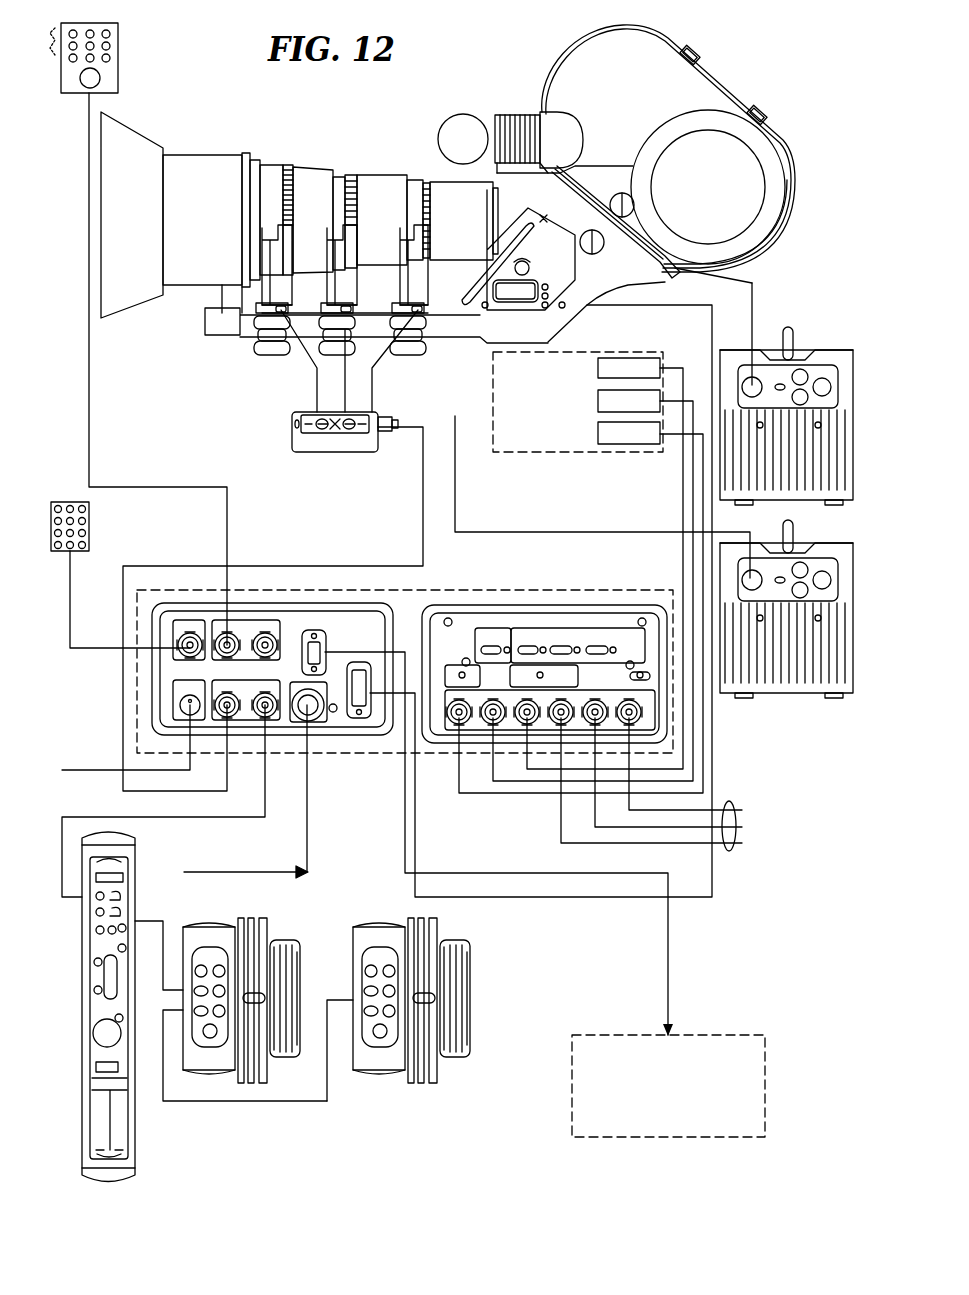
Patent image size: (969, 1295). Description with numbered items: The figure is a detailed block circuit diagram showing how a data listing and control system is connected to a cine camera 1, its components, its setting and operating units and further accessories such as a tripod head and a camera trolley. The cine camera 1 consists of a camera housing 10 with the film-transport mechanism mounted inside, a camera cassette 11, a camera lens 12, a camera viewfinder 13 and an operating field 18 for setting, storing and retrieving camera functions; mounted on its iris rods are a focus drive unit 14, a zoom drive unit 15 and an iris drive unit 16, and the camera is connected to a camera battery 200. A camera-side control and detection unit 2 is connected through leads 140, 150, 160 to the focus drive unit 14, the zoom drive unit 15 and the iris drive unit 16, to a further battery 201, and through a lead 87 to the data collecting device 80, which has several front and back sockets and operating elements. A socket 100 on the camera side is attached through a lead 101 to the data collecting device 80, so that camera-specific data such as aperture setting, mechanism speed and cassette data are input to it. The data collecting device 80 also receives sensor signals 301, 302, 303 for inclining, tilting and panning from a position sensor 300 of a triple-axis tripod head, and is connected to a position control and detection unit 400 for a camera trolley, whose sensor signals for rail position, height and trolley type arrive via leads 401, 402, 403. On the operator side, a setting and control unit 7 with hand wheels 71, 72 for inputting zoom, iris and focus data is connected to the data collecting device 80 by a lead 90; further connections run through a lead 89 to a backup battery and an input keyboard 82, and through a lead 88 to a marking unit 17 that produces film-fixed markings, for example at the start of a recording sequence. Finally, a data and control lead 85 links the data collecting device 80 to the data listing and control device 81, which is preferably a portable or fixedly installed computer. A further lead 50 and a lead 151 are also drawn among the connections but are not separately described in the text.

The cine camera 1 is at (204, 87).
The control and detection unit 2 is at (313, 458).
The setting and control unit 7 is at (150, 1126).
The camera housing 10 is at (577, 209).
The camera cassette 11 is at (688, 80).
The camera lens 12 is at (303, 175).
The camera viewfinder 13 is at (460, 112).
The focus drive unit 14 is at (281, 310).
The zoom drive unit 15 is at (345, 310).
The iris drive unit 16 is at (418, 310).
The marking unit 17 is at (118, 40).
The operating field 18 is at (515, 290).
The cable 50 is at (240, 872).
The hand wheel 71 is at (288, 1058).
The hand wheel 72 is at (452, 1058).
The data collecting device 80 is at (420, 590).
The data listing and control device 81 is at (712, 1035).
The input keyboard 82 is at (100, 524).
The data and control lead 85 is at (668, 963).
The lead 87 is at (423, 545).
The lead 88 is at (115, 484).
The lead 89 is at (93, 660).
The lead 90 is at (150, 817).
The socket 100 is at (588, 306).
The lead 101 is at (640, 307).
The lead 140 is at (315, 408).
The lead 150 is at (345, 384).
The cable 151 is at (105, 770).
The lead 160 is at (372, 390).
The camera battery 200 is at (718, 505).
The further battery 201 is at (755, 712).
The position sensor 300 is at (581, 572).
The sensor signal 301 is at (598, 369).
The sensor signal 302 is at (598, 401).
The sensor signal 303 is at (598, 433).
The position control and detection unit 400 is at (735, 845).
The lead 401 is at (742, 810).
The lead 402 is at (742, 827).
The lead 403 is at (742, 843).